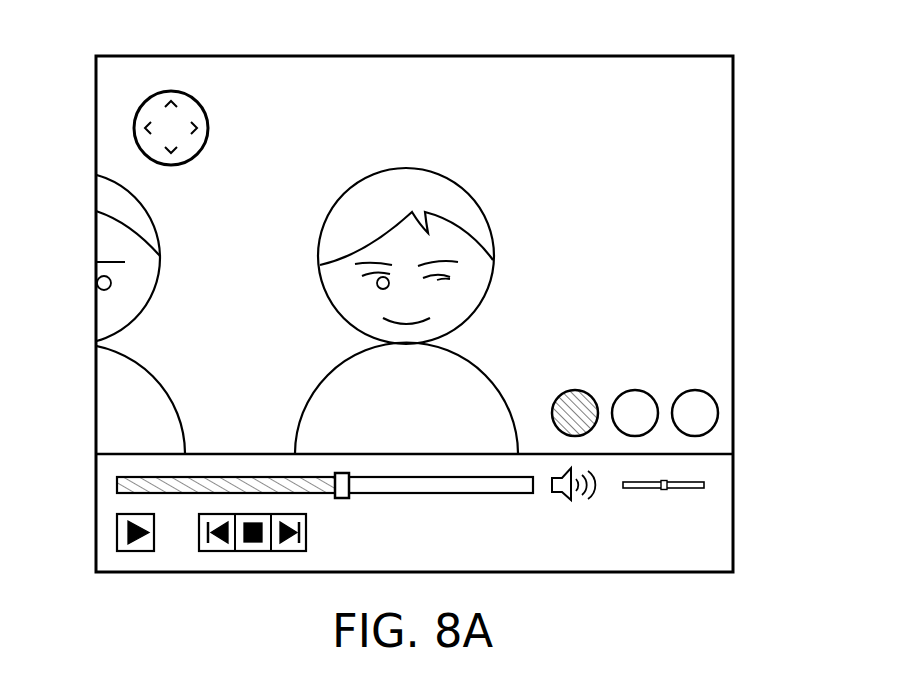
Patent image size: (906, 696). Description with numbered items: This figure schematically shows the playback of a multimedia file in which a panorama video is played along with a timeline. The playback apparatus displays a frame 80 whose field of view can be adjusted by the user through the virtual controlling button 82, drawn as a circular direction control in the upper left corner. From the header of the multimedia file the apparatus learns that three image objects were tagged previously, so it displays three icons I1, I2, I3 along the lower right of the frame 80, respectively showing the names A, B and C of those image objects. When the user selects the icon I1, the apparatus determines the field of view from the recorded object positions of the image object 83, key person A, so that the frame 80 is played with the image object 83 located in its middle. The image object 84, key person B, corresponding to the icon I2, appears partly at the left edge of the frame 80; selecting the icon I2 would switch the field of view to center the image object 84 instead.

The frame 80 is at (685, 123).
The virtual controlling button 82 is at (172, 90).
The image object 83 is at (407, 168).
The image object 84 is at (117, 180).
The icon I1 is at (573, 391).
The icon I2 is at (653, 395).
The icon I3 is at (718, 413).